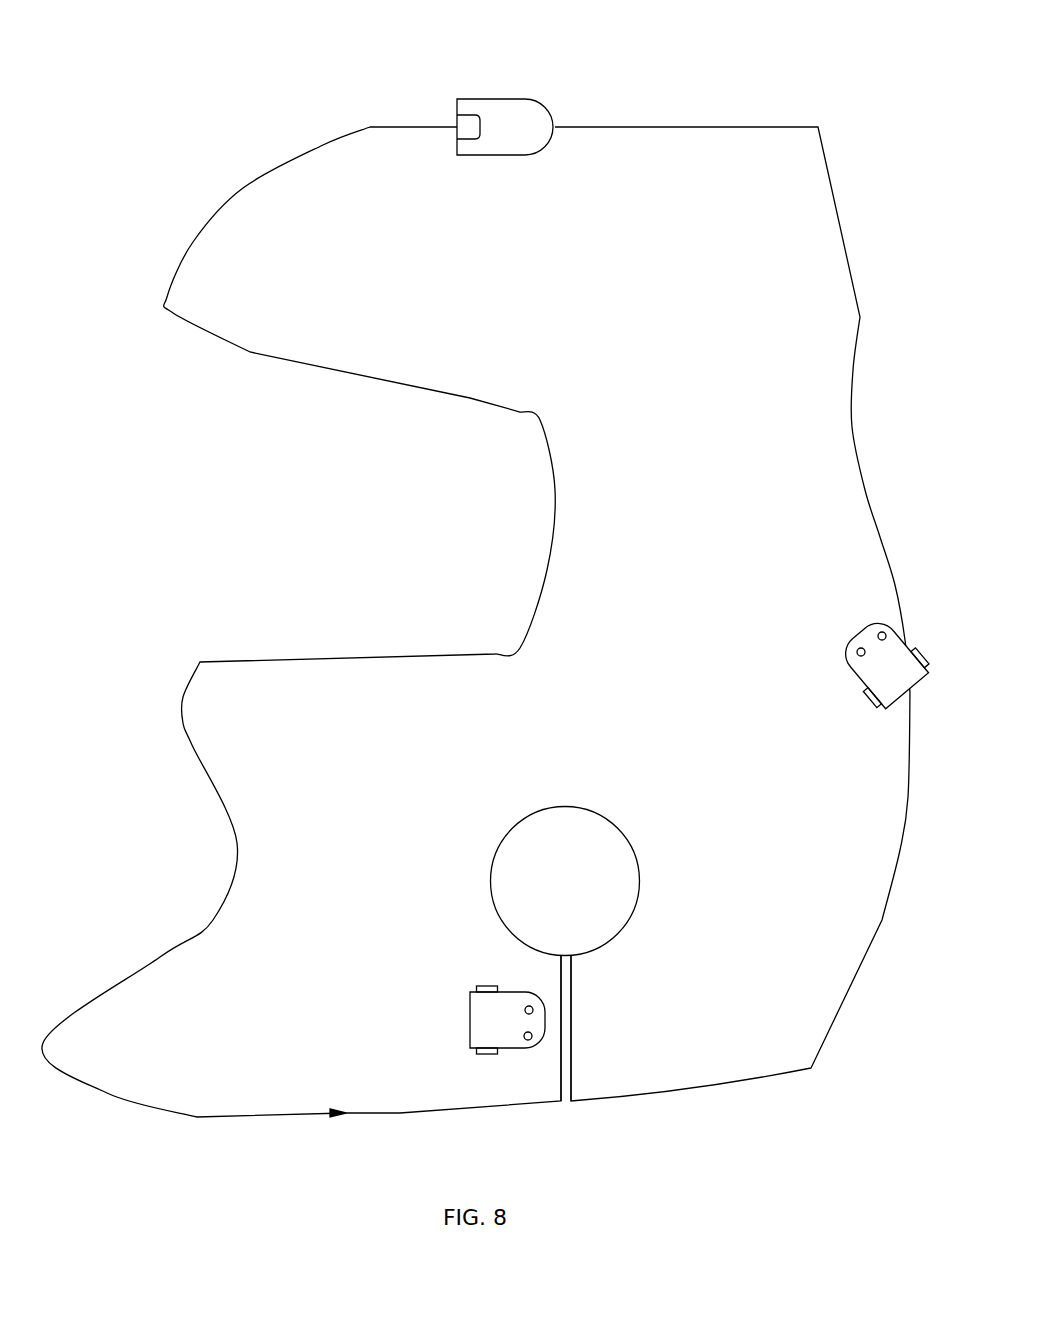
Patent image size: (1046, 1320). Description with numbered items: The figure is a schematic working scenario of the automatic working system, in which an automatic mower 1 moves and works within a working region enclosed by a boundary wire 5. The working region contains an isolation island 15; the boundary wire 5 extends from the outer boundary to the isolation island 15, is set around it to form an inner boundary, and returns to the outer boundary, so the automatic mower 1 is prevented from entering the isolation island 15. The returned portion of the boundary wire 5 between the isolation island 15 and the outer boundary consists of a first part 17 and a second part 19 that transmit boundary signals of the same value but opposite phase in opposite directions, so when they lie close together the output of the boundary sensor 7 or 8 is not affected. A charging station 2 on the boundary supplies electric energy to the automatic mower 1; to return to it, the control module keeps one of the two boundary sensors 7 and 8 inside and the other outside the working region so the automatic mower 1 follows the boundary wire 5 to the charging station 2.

The automatic mower 1 is at (470, 1017).
The charging station 2 is at (520, 130).
The boundary wire 5 is at (838, 207).
The boundary sensor 7 is at (526, 1008).
The boundary sensor 8 is at (526, 1039).
The isolation island 15 is at (518, 820).
The first part 17 is at (557, 1012).
The second part 19 is at (571, 1002).